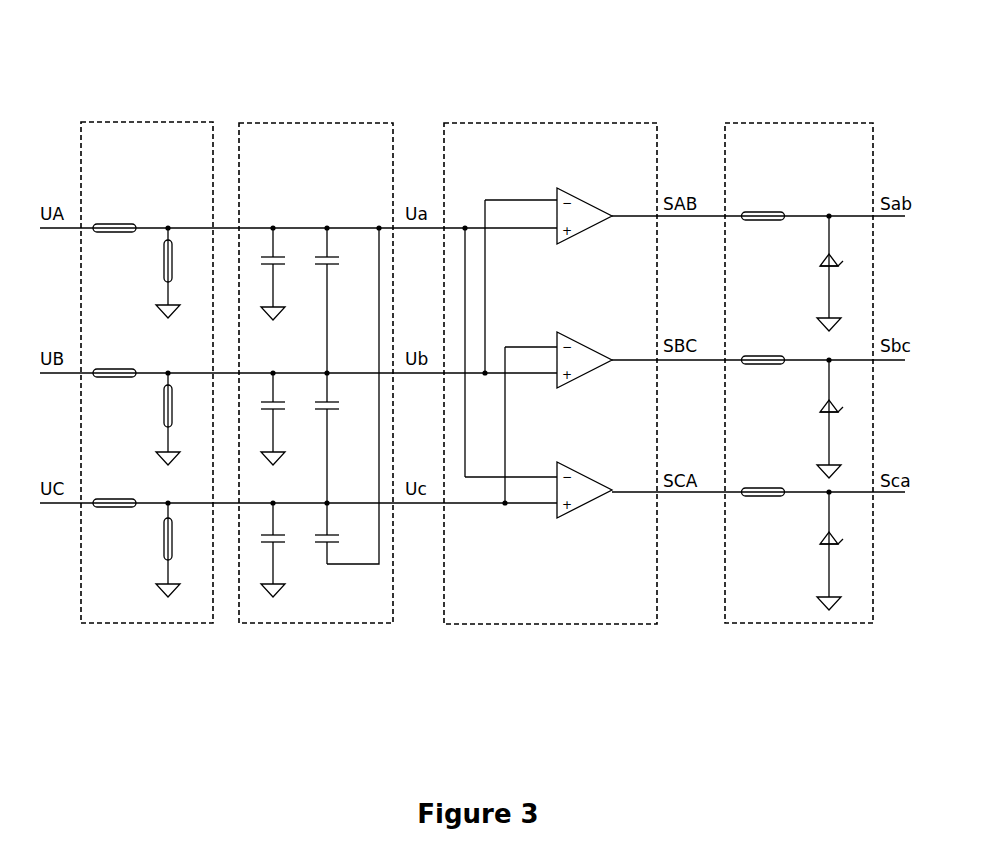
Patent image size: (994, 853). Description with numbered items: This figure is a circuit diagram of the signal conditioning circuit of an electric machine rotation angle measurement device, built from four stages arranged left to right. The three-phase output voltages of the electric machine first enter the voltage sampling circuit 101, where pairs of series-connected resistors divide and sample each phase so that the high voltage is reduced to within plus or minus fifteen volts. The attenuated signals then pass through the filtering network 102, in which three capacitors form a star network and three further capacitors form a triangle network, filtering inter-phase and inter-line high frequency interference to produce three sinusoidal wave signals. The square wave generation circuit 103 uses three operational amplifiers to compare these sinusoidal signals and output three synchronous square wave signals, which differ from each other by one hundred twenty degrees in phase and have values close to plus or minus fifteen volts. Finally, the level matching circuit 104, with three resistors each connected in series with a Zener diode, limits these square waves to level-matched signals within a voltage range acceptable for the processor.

The voltage sampling circuit 101 is at (141, 122).
The filtering network 102 is at (310, 122).
The square wave generation circuit 103 is at (533, 122).
The level matching circuit 104 is at (789, 122).